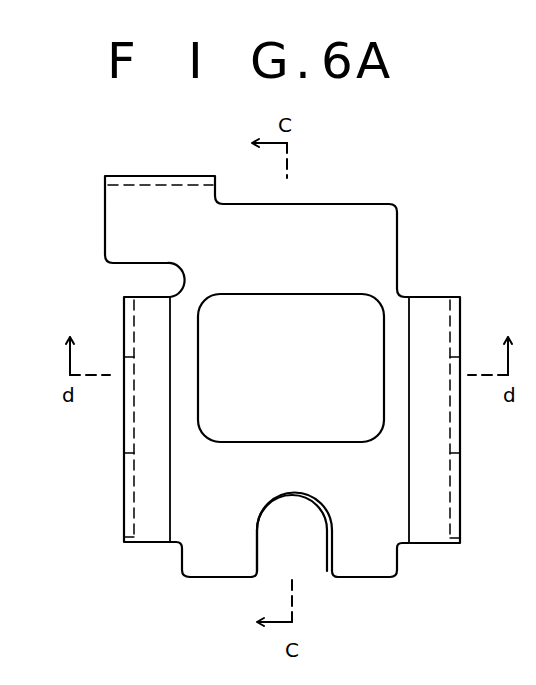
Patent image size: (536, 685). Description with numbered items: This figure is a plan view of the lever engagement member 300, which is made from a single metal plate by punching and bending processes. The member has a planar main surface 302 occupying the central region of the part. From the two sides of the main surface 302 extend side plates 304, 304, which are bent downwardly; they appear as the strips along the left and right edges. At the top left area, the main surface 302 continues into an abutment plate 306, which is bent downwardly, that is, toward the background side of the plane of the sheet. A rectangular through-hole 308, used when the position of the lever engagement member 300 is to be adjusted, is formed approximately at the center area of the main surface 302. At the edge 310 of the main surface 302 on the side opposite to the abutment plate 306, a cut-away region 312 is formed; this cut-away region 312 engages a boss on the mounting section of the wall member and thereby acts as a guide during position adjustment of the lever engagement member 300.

The lever engagement member 300 is at (402, 172).
The main surface 302 is at (306, 253).
The side plates 304 is at (123, 482).
The abutment plate 306 is at (164, 175).
The through-hole 308 is at (366, 298).
The edge 310 is at (208, 578).
The cut-away region 312 is at (324, 557).